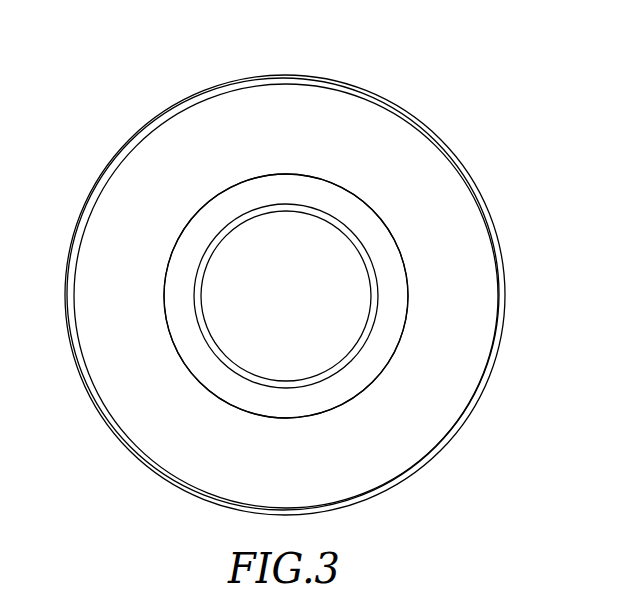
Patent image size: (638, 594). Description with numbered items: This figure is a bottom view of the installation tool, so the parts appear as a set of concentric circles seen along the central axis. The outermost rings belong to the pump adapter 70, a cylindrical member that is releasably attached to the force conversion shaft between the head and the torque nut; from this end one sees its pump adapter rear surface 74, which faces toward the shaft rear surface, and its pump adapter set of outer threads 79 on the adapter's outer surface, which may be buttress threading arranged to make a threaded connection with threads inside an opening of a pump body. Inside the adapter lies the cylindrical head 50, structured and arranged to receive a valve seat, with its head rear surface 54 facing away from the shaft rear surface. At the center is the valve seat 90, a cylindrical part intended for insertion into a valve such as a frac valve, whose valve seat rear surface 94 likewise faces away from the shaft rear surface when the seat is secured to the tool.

The head 50 is at (332, 232).
The head rear surface 54 is at (328, 350).
The pump adapter 70 is at (233, 79).
The pump adapter rear surface 74 is at (327, 113).
The pump adapter set of outer threads 79 is at (113, 156).
The valve seat 90 is at (404, 290).
The valve seat rear surface 94 is at (185, 325).